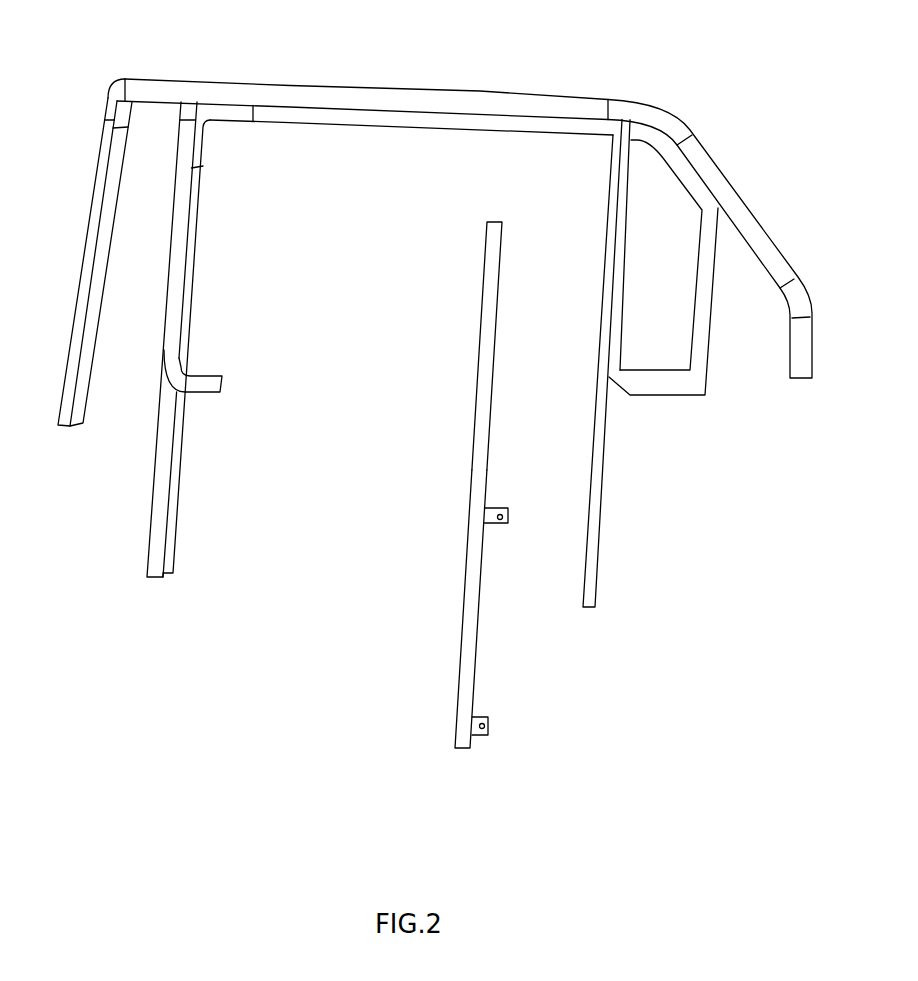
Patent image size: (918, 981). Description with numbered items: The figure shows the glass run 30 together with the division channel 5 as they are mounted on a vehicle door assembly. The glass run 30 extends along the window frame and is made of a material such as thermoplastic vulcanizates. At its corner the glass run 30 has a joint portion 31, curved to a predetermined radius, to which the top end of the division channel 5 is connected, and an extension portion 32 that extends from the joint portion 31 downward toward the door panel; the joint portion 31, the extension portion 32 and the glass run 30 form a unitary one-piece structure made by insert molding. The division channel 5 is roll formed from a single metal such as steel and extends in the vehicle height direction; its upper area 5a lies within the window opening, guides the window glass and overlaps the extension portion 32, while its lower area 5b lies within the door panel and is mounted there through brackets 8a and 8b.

The glass run 30 is at (435, 305).
The joint portion 31 is at (665, 108).
The extension portion 32 is at (595, 487).
The division channel 5 is at (448, 485).
The upper area 5a is at (490, 313).
The lower area 5b is at (470, 617).
The bracket 8a is at (505, 525).
The bracket 8b is at (483, 737).